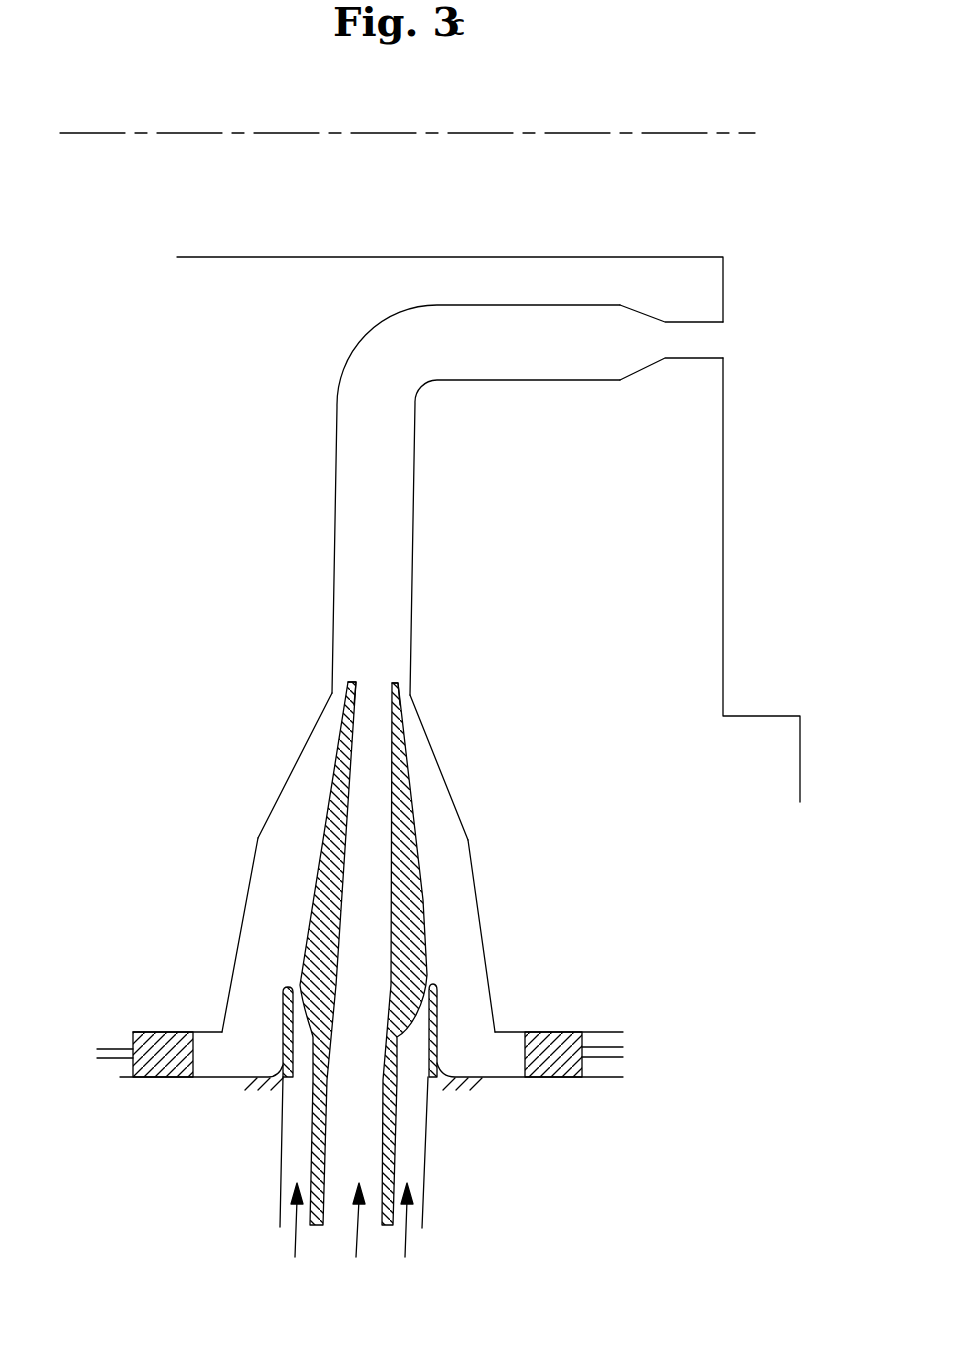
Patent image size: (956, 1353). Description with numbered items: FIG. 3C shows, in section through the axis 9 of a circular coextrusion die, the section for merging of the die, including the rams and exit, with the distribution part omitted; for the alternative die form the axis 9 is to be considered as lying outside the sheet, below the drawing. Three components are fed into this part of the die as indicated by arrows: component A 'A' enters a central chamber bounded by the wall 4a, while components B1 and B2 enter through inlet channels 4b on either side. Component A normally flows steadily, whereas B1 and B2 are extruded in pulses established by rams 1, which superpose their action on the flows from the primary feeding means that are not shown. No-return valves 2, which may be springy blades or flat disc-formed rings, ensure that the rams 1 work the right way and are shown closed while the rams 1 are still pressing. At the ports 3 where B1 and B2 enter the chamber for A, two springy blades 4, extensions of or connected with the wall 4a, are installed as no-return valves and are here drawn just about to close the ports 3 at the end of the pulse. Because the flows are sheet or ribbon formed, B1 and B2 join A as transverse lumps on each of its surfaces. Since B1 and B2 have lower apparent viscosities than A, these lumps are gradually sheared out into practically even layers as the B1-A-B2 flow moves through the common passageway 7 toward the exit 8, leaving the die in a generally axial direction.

The rams 1 is at (140, 1077).
The no-return valves 2 is at (283, 1013).
The ports 3 is at (341, 688).
The springy blades 4 is at (394, 718).
The wall of the chamber for A 4a is at (402, 881).
The inlet channels 4b is at (358, 935).
The common passageway 7 is at (476, 500).
The exit 8 is at (705, 339).
The axis 9 is at (419, 131).
The component A is at (355, 1236).
The component B1 is at (303, 1236).
The component B2 is at (415, 1236).